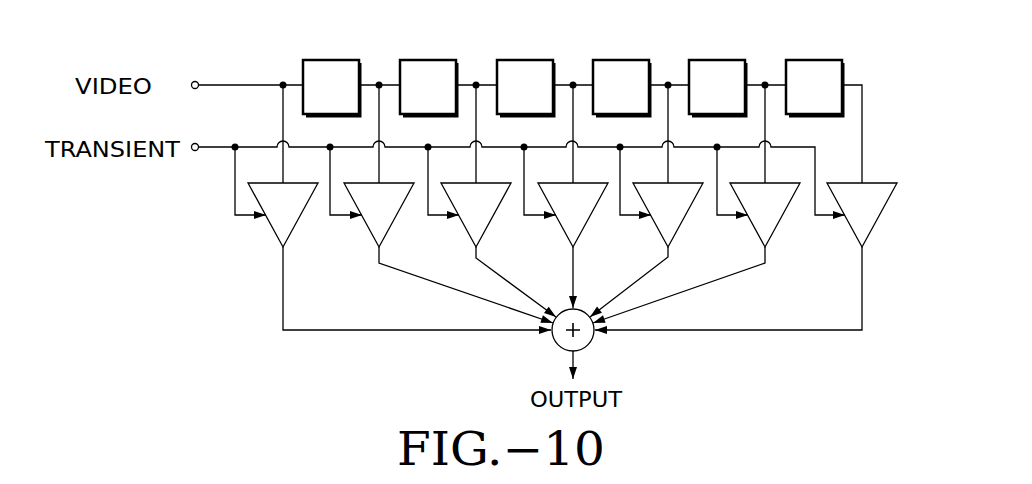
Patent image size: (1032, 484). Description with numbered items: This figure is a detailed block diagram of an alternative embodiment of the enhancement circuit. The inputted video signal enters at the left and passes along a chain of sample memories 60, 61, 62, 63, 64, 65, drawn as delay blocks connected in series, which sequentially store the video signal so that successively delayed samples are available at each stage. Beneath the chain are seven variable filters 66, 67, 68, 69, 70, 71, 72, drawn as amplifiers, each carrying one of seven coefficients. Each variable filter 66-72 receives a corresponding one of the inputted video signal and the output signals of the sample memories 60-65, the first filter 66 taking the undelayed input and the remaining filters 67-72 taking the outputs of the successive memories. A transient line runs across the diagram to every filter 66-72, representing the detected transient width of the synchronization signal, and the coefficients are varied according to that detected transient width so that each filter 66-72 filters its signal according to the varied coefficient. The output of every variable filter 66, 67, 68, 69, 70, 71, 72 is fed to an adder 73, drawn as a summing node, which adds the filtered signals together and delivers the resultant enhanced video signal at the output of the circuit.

The sample memory 60 is at (331, 60).
The sample memory 61 is at (428, 60).
The sample memory 62 is at (525, 60).
The sample memory 63 is at (621, 60).
The sample memory 64 is at (717, 60).
The sample memory 65 is at (815, 60).
The variable filter 66 is at (300, 215).
The variable filter 67 is at (396, 215).
The variable filter 68 is at (493, 215).
The variable filter 69 is at (590, 215).
The variable filter 70 is at (686, 215).
The variable filter 71 is at (783, 215).
The variable filter 72 is at (880, 215).
The adder 73 is at (587, 347).